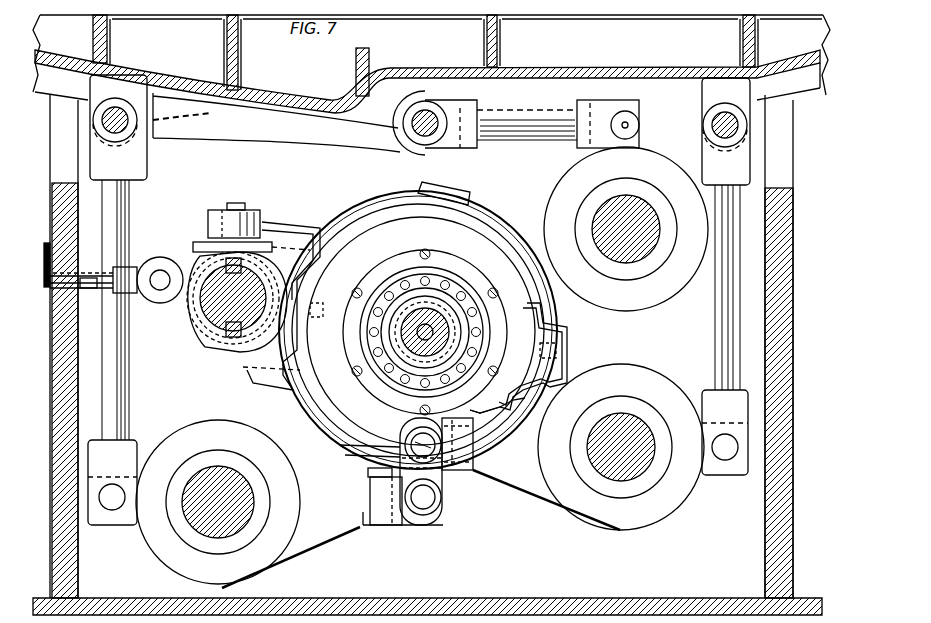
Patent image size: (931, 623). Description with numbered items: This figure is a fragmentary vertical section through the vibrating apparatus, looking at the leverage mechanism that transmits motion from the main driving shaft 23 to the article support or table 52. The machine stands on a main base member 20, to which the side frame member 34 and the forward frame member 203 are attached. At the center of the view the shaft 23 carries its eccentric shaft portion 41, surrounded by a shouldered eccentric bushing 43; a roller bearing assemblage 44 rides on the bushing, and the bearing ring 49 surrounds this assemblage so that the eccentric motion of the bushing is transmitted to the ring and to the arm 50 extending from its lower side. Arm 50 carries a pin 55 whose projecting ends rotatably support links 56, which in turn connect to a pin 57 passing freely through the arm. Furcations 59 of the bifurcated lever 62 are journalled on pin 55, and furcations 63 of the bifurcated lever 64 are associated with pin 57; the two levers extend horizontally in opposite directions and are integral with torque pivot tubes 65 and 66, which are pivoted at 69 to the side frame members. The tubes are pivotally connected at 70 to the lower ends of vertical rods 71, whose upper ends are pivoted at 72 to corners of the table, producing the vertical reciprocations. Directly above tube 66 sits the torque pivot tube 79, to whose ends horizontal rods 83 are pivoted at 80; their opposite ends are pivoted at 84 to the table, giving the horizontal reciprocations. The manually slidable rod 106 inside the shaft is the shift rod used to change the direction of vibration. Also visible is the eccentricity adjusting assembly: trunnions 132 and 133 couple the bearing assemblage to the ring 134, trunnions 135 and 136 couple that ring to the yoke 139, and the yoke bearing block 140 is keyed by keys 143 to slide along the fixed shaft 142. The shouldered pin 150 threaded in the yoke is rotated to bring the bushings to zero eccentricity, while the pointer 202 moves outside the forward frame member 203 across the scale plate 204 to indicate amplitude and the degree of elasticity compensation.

The main base member 20 is at (485, 598).
The main driving shaft 23 is at (427, 310).
The side frame member 34 is at (742, 545).
The eccentric shaft portion 41 is at (403, 307).
The eccentric bushing 43 is at (388, 336).
The roller bearing assemblage 44 is at (389, 286).
The bearing ring 49 is at (480, 440).
The arm 50 is at (472, 442).
The article support or table 52 is at (212, 82).
The pin 55 is at (425, 515).
The link 56 is at (444, 490).
The pin 57 is at (422, 440).
The furcation 59 is at (400, 525).
The bifurcated lever 62 is at (362, 528).
The furcation 63 is at (474, 463).
The bifurcated lever 64 is at (546, 500).
The torque pivot tube 65 is at (218, 458).
The torque pivot tube 66 is at (608, 398).
The pivot 69 is at (626, 262).
The pivotal connection 70 is at (112, 510).
The rod 71 is at (122, 410).
The pivotal connection 72 is at (128, 116).
The torque pivot tube 79 is at (597, 197).
The pivotal connection 80 is at (637, 108).
The horizontal rod 83 is at (500, 118).
The pivotal connection 84 is at (425, 118).
The manually slidable rod 106 is at (430, 330).
The trunnion 132 is at (270, 372).
The trunnion 133 is at (543, 350).
The ring 134 is at (498, 240).
The trunnion 135 is at (440, 195).
The trunnion 136 is at (367, 472).
The yoke 139 is at (335, 215).
The bearing block 140 is at (205, 240).
The fixed shaft 142 is at (212, 308).
The key 143 is at (262, 232).
The shouldered pin 150 is at (162, 278).
The pointer 202 is at (50, 258).
The forward frame member 203 is at (70, 380).
The scale plate 204 is at (53, 225).